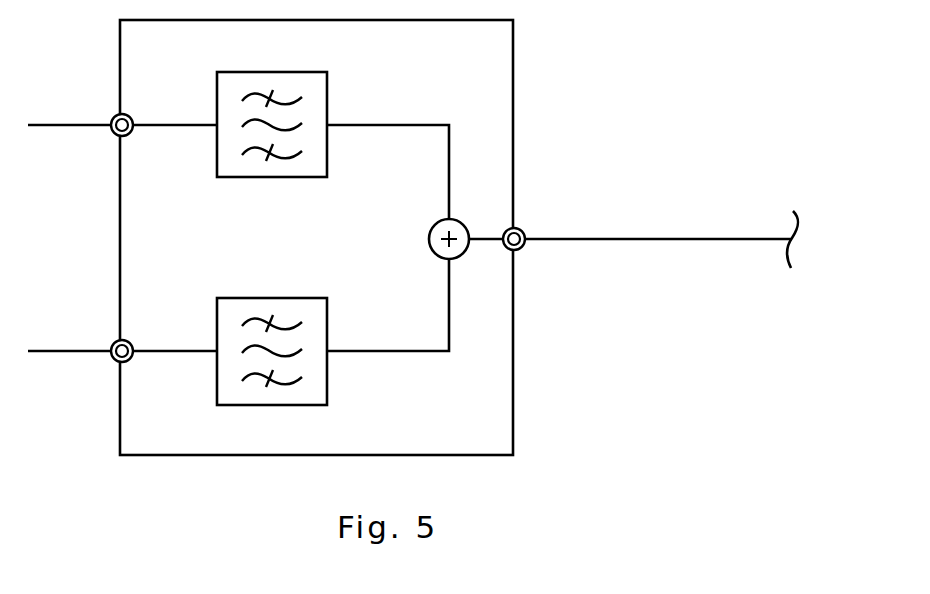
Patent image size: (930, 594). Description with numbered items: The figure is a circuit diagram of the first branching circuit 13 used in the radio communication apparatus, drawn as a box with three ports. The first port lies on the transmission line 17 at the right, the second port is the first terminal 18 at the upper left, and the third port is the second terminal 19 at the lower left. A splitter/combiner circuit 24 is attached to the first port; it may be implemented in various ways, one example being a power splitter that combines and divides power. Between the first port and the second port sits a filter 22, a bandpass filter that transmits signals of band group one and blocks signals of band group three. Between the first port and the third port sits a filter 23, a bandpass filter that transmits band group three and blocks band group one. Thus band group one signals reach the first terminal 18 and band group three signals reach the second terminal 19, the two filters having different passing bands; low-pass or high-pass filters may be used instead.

The first branching circuit 13 is at (515, 60).
The transmission line 17 is at (602, 240).
The first terminal 18 is at (117, 117).
The second terminal 19 is at (117, 343).
The filter 22 is at (330, 93).
The filter 23 is at (330, 317).
The splitter/combiner circuit 24 is at (468, 228).